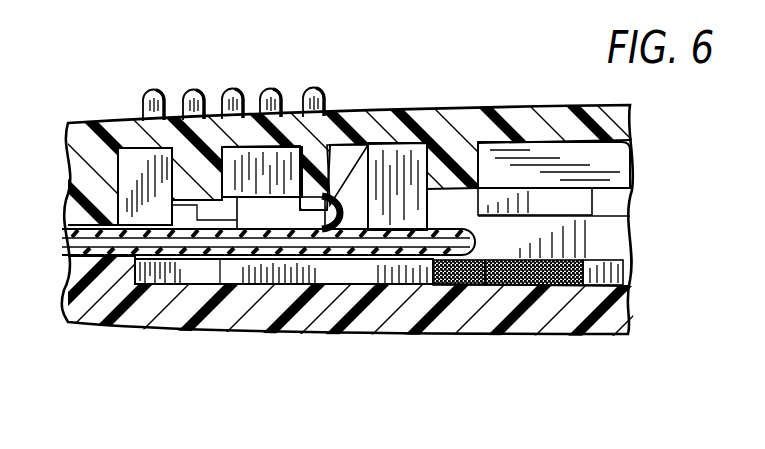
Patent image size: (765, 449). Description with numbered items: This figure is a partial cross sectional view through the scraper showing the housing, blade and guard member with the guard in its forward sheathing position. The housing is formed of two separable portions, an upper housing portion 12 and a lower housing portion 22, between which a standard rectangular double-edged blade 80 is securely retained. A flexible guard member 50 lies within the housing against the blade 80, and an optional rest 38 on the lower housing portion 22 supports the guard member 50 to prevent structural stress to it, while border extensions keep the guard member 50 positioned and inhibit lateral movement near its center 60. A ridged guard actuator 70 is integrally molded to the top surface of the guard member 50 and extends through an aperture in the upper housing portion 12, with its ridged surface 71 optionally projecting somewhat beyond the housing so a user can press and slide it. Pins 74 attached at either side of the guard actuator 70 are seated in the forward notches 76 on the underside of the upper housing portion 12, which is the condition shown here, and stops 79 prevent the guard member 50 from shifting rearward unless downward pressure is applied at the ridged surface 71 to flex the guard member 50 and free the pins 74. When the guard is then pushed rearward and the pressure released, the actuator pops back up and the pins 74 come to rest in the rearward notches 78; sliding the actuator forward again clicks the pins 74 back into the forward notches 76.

The upper housing portion 12 is at (454, 123).
The lower housing portion 22 is at (236, 320).
The rest 38 is at (505, 270).
The guard member 50 is at (72, 232).
The center 60 is at (487, 265).
The guard actuator 70 is at (229, 95).
The ridged surface 71 is at (194, 95).
The pins 74 is at (182, 265).
The forward notches 76 is at (242, 150).
The rearward notches 78 is at (386, 150).
The stops 79 is at (347, 152).
The double-edged blade 80 is at (68, 241).